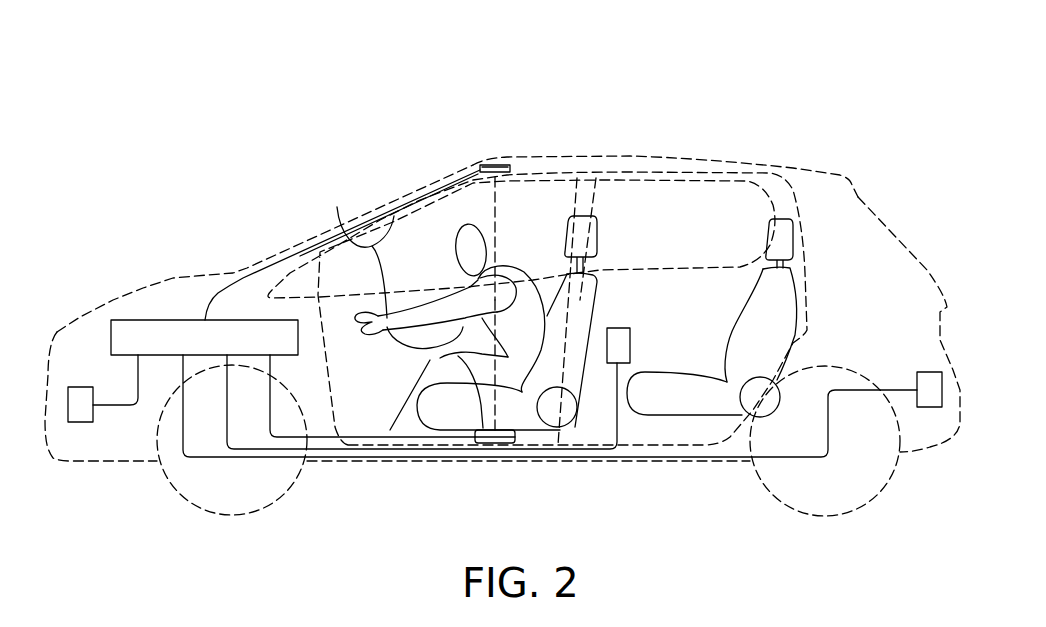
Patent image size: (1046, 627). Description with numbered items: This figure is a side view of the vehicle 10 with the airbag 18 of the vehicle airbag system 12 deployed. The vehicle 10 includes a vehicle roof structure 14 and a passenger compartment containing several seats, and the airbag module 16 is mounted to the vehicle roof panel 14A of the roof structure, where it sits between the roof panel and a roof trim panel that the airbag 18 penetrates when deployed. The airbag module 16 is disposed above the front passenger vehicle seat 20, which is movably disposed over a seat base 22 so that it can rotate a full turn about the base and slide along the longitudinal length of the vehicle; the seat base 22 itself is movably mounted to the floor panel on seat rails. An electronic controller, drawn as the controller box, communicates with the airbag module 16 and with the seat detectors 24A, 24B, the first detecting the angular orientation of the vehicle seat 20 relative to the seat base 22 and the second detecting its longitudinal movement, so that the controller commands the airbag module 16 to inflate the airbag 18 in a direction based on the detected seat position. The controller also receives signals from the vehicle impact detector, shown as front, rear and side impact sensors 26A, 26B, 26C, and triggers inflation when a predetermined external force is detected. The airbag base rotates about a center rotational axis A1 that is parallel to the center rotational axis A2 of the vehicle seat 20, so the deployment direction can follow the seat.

The vehicle 10 is at (806, 99).
The vehicle airbag system 12 is at (408, 166).
The vehicle roof structure 14 is at (799, 168).
The vehicle roof panel 14A is at (668, 157).
The airbag module 16 is at (507, 163).
The airbag 18 is at (358, 250).
The vehicle seat 20 is at (603, 229).
The seat base 22 is at (517, 436).
The seat detector 24A is at (440, 358).
The seat detector 24B is at (672, 347).
The front impact sensor 26A is at (80, 423).
The rear impact sensor 26B is at (928, 372).
The side impact sensor 26C is at (631, 342).
The center rotational axis A1 is at (481, 164).
The center rotational axis A2 is at (483, 444).